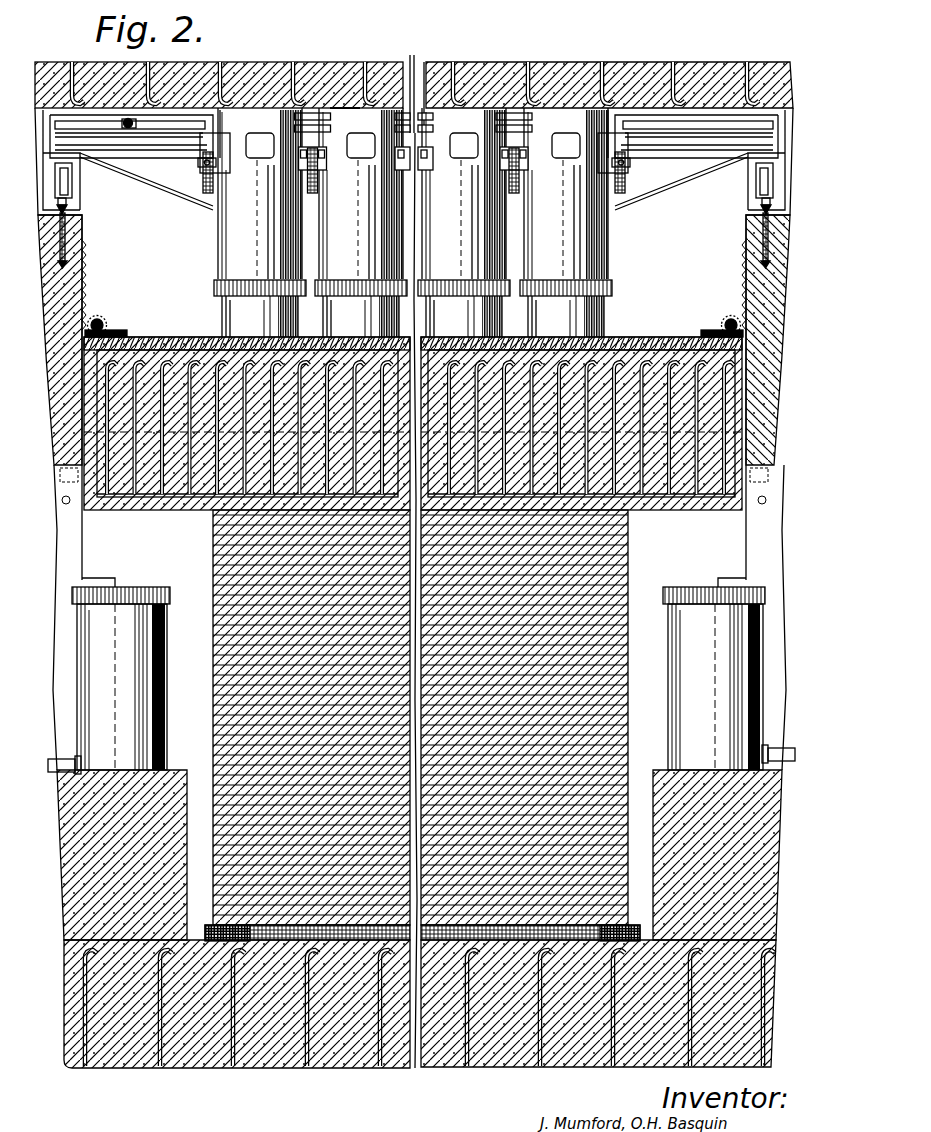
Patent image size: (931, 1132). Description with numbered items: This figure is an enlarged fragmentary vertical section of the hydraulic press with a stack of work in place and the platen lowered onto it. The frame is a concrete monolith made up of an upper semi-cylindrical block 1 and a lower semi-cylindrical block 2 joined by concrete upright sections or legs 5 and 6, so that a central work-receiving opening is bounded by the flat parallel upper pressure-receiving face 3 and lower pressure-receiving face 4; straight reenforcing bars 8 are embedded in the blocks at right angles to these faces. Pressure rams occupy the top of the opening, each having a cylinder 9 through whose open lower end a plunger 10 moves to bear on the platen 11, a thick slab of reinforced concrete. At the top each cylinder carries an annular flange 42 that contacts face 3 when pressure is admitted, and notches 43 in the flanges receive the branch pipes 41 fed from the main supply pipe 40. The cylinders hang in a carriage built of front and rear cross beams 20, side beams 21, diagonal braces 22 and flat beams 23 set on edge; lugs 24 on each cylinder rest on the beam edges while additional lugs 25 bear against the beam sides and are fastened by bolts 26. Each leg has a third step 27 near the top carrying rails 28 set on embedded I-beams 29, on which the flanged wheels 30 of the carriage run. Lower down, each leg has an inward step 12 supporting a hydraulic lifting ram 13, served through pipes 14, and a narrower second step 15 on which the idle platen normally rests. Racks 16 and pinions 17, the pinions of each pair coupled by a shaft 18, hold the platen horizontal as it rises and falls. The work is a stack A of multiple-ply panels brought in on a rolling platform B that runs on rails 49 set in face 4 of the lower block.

The upper semi-cylindrical concrete block 1 is at (713, 62).
The lower semi-cylindrical concrete block 2 is at (345, 1068).
The upper pressure-receiving face 3 is at (340, 107).
The lower pressure-receiving face 4 is at (477, 935).
The concrete upright section 5 is at (784, 555).
The concrete upright section 6 is at (57, 556).
The straight reenforcing bars 8 is at (152, 64).
The ram cylinders 9 is at (413, 193).
The plungers 10 is at (224, 312).
The platen 11 is at (166, 511).
The step portion 12 is at (108, 770).
The hydraulic lifting rams 13 is at (418, 678).
The pipes 14 is at (54, 764).
The second step 15 is at (104, 578).
The racks 16 is at (86, 297).
The pinions 17 is at (90, 325).
The shaft 18 is at (106, 326).
The front and rear cross beams 20 is at (696, 152).
The side beams 21 is at (207, 192).
The braces 22 is at (160, 186).
The flat beams 23 is at (310, 190).
The lugs 24 is at (320, 160).
The additional lugs 25 is at (206, 150).
The bolts 26 is at (205, 165).
The third step 27 is at (78, 211).
The rails 28 is at (70, 202).
The I-beams 29 is at (70, 240).
The flanged wheels 30 is at (68, 183).
The main supply pipe 40 is at (125, 120).
The branch pipes 41 is at (157, 122).
The annular flanges 42 is at (330, 112).
The notches 43 is at (426, 108).
The rails 49 is at (312, 885).
The stack of multiple-ply panels A is at (420, 717).
The rolling platform B is at (341, 925).